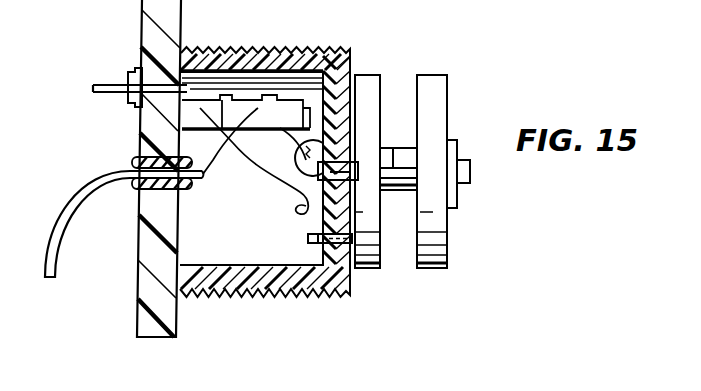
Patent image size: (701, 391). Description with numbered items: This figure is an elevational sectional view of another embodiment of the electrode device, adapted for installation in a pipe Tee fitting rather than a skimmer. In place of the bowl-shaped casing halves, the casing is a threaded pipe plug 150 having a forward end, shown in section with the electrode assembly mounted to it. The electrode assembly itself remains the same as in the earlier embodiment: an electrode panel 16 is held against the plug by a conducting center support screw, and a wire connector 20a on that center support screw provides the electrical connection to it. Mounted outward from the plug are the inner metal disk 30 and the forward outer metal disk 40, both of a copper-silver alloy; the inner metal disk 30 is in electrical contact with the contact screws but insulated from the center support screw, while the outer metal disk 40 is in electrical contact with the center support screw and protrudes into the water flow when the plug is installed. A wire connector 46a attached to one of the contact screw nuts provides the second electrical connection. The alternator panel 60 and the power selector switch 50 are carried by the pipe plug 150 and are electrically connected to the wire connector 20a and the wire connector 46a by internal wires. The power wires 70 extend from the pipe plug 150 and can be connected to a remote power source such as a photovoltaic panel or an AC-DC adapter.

The threaded pipe plug 150 is at (153, 338).
The alternator panel 60 is at (256, 114).
The wire connector 20a is at (311, 143).
The electrode panel 16 is at (304, 207).
The wire connector 46a is at (315, 220).
The inner metal disk 30 is at (366, 80).
The outer metal disk 40 is at (437, 80).
The power selector switch 50 is at (93, 87).
The power wires 70 is at (56, 268).